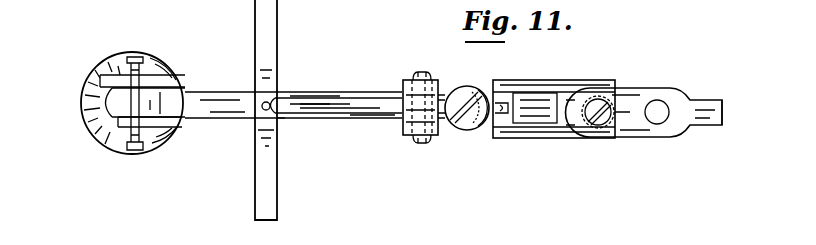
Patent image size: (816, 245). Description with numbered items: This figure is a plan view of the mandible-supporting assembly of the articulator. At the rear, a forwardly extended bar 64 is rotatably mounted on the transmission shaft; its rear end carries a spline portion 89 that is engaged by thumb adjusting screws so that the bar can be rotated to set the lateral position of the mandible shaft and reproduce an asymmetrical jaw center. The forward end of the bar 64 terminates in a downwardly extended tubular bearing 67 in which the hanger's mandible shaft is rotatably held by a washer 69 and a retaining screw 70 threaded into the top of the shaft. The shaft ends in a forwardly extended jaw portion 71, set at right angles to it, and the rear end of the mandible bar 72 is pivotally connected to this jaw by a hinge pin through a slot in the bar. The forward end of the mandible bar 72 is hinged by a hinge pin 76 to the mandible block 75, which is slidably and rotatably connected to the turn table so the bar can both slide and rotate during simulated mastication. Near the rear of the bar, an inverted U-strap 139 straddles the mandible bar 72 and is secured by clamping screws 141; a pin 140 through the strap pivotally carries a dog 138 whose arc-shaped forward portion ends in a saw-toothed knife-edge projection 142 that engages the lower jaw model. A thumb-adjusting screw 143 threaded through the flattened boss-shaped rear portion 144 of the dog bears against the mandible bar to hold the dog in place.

The mandible block 75 is at (95, 105).
The hinge pin 76 is at (112, 67).
The mandible bar 72 is at (265, 53).
The dog 138 is at (367, 108).
The saw-toothed knife-edge projection 142 is at (277, 118).
The pin 140 is at (417, 102).
The clamping screws 141 is at (425, 77).
The inverted U-strap 139 is at (442, 88).
The thumb-adjusting screw 143 is at (467, 117).
The boss-shaped rear portion 144 is at (497, 138).
The jaw portion 71 is at (505, 83).
The tubular bearing 67 is at (585, 123).
The retaining screw 70 is at (596, 102).
The washer 69 is at (612, 102).
The forwardly extended bar 64 is at (638, 118).
The spline portion 89 is at (724, 117).